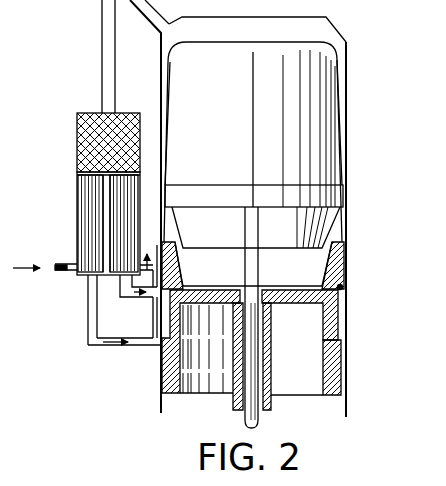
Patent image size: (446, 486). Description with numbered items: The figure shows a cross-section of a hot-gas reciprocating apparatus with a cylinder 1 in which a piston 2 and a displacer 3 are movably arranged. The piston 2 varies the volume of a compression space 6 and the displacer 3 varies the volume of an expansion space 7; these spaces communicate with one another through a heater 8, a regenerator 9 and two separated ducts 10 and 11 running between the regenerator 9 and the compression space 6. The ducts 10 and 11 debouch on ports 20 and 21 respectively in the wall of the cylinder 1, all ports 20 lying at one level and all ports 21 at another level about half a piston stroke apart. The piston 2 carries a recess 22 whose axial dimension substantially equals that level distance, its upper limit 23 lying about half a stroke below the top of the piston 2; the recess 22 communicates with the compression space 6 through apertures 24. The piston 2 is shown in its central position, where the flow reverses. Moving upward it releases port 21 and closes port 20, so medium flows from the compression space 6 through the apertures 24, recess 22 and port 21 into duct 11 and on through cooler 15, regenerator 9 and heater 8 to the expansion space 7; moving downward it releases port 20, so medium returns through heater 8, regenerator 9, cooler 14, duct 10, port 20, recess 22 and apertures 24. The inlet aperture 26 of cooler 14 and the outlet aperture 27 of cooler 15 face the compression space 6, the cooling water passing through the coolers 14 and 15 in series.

The cylinder 1 is at (347, 218).
The piston 2 is at (328, 366).
The displacer 3 is at (313, 103).
The compression space 6 is at (310, 263).
The expansion space 7 is at (305, 31).
The heater 8 is at (108, 42).
The regenerator 9 is at (90, 143).
The duct 10 is at (100, 347).
The duct 11 is at (125, 291).
The cooler 14 is at (90, 238).
The cooler 15 is at (128, 203).
The port 20 is at (157, 348).
The port 21 is at (156, 300).
The recess 22 is at (338, 318).
The upper limit 23 is at (343, 286).
The apertures 24 is at (344, 270).
The inlet aperture 26 is at (64, 273).
The outlet aperture 27 is at (135, 278).